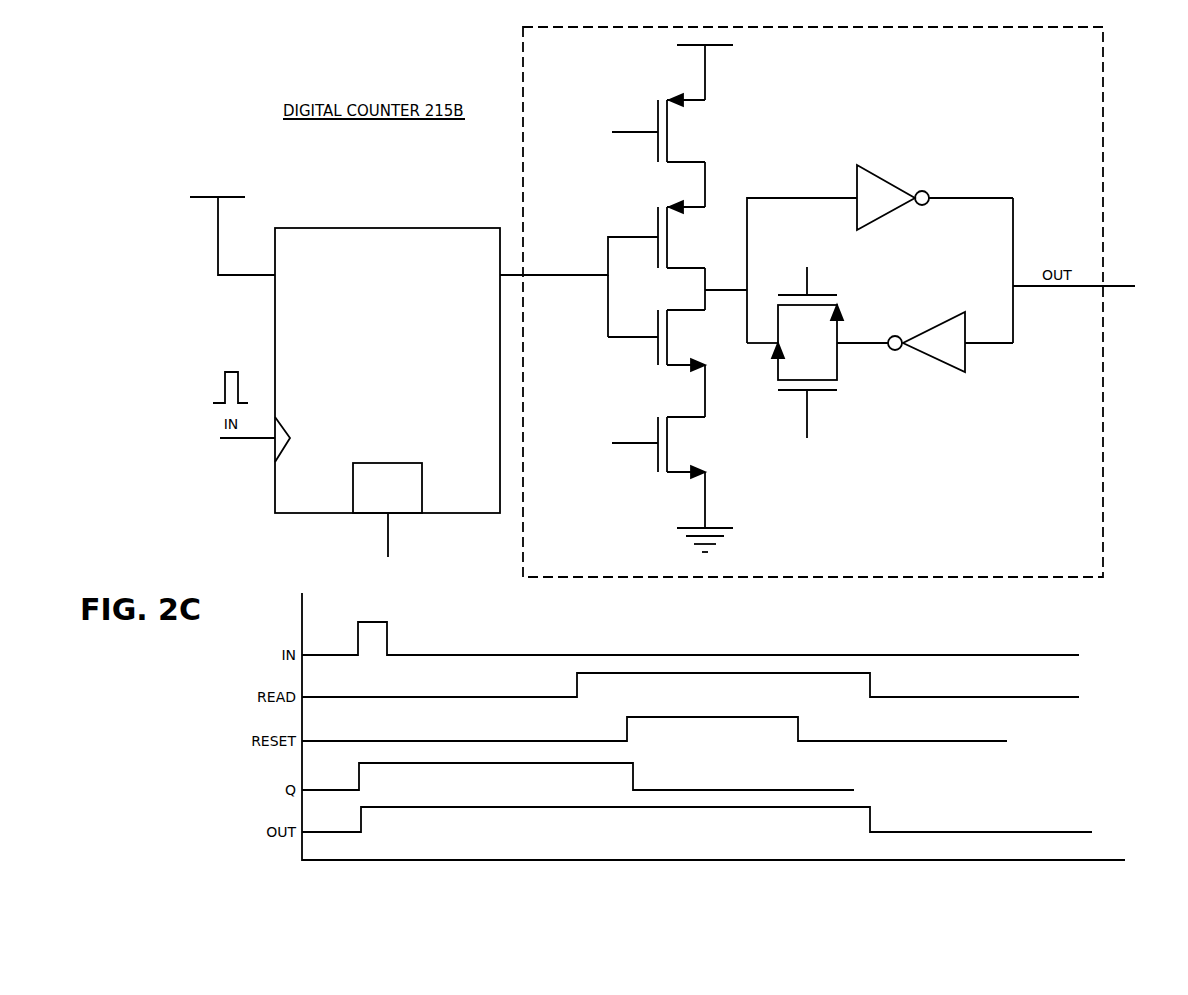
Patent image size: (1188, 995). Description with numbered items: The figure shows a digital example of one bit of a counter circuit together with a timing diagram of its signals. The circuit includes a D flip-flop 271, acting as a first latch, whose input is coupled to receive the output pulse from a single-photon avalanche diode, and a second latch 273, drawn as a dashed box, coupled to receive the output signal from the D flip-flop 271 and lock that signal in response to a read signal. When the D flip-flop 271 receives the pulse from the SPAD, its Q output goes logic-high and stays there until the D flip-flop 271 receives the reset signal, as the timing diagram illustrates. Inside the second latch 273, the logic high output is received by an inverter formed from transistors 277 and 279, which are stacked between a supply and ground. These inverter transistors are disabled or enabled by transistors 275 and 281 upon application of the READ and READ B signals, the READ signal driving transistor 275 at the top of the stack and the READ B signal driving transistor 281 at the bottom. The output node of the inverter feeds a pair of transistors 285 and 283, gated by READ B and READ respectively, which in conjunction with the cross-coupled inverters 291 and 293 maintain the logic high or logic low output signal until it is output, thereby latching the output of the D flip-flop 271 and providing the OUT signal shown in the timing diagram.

The D flip-flop 271 is at (392, 248).
The second latch 273 is at (1088, 103).
The transistor 275 is at (693, 130).
The transistor 277 is at (647, 223).
The transistor 279 is at (650, 347).
The transistor 281 is at (693, 445).
The transistor 283 is at (825, 408).
The transistor 285 is at (827, 283).
The inverter 291 is at (885, 188).
The inverter 293 is at (945, 352).